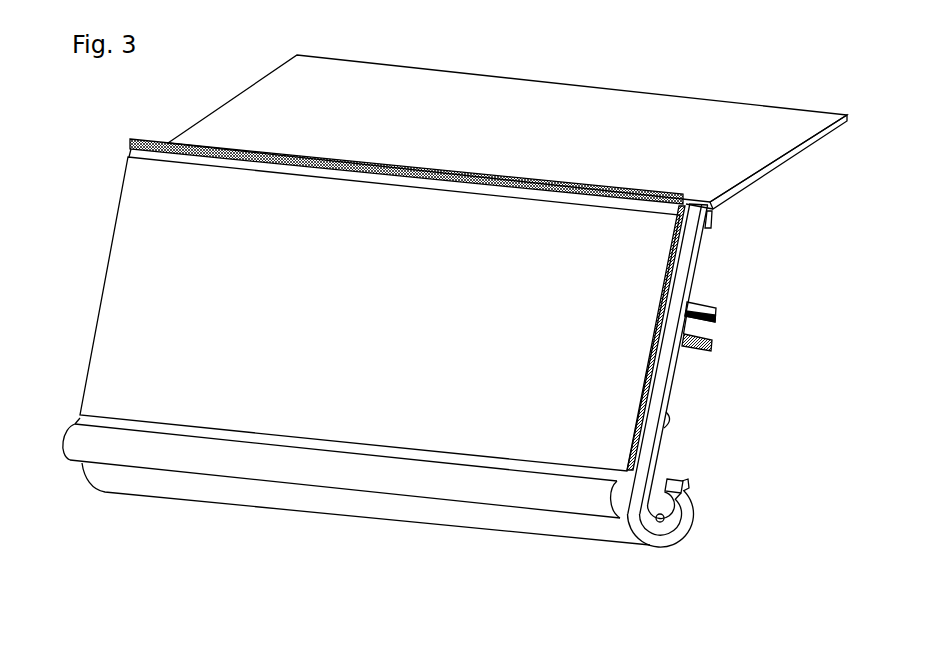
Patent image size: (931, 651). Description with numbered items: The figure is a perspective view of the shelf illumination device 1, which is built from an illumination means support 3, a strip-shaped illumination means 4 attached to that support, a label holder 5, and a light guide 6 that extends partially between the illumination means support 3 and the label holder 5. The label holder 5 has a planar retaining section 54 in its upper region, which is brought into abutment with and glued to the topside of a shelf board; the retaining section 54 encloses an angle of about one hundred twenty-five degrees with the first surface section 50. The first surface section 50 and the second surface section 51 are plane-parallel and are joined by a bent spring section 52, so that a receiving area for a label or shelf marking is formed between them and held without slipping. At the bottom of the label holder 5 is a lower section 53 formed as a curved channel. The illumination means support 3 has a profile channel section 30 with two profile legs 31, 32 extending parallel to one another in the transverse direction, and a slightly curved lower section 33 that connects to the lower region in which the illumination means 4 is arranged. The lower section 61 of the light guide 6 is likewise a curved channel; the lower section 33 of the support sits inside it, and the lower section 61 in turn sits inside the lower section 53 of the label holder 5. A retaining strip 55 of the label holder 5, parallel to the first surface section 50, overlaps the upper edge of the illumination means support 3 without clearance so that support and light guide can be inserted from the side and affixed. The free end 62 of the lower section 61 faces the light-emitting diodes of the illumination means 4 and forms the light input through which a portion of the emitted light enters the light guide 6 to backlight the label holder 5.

The shelf illumination device 1 is at (88, 171).
The illumination means support 3 is at (728, 401).
The illumination means 4 is at (669, 432).
The label holder 5 is at (346, 377).
The light guide 6 is at (697, 277).
The profile channel section 30 is at (707, 333).
The profile leg 31 is at (711, 345).
The profile leg 32 is at (716, 314).
The lower section of the illumination means support 33 is at (659, 523).
The first surface section 50 is at (662, 363).
The second surface section 51 is at (364, 305).
The spring section 52 is at (621, 512).
The lower section of the label holder 53 is at (678, 538).
The retaining section 54 is at (463, 140).
The retaining strip 55 is at (711, 220).
The lower section of the light guide 61 is at (682, 508).
The free end 62 is at (669, 483).